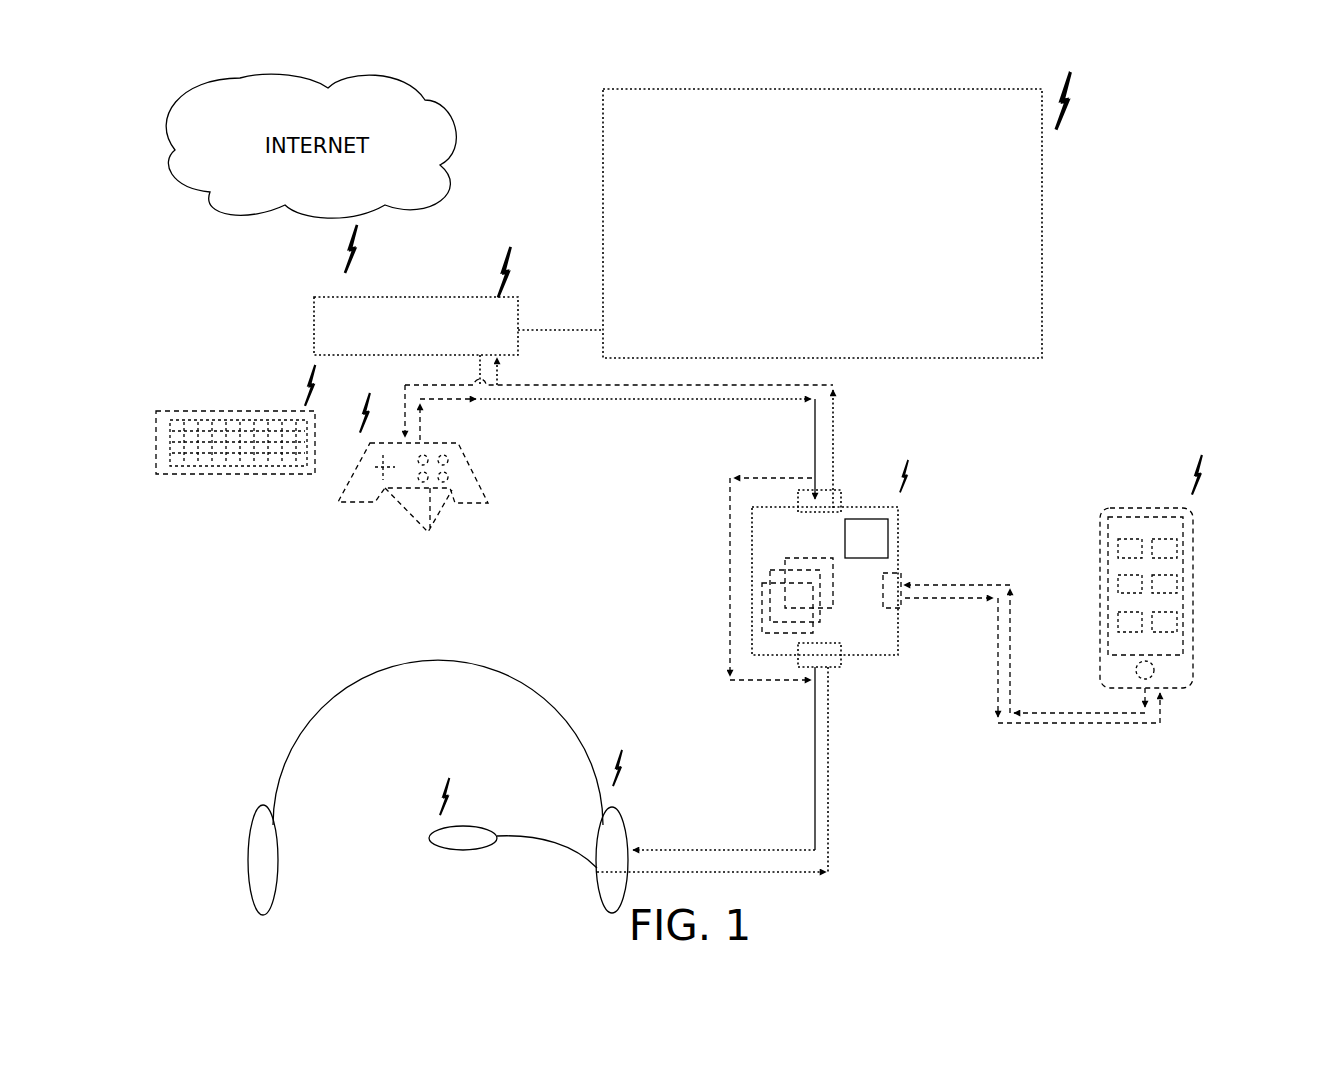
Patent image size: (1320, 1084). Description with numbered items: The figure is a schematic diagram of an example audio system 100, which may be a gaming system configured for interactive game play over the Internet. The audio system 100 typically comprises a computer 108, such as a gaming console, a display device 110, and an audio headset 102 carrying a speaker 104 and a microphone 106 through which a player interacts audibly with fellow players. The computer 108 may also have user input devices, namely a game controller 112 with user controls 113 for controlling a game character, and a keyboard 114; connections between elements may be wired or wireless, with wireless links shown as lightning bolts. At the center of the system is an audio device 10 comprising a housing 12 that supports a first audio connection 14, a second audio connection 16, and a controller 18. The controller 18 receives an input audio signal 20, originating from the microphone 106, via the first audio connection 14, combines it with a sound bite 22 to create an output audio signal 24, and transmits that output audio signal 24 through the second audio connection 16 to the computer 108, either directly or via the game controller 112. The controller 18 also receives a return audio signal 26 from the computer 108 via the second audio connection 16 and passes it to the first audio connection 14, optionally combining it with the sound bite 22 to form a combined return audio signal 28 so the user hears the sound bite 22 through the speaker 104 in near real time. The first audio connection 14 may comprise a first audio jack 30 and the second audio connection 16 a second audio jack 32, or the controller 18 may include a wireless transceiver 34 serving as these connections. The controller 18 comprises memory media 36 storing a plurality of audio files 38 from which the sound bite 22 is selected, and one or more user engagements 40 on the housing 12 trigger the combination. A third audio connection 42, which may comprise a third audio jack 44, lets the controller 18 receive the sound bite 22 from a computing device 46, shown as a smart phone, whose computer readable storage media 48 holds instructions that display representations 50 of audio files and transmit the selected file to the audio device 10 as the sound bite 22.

The audio device 10 is at (348, 522).
The housing 12 is at (868, 655).
The first audio connection 14 is at (828, 643).
The second audio connection 16 is at (808, 512).
The controller 18 is at (888, 540).
The input audio signal 20 is at (828, 793).
The sound bite 22 is at (900, 514).
The output audio signal 24 is at (442, 385).
The return audio signal 26 is at (422, 420).
The combined return audio signal 28 is at (813, 815).
The first audio jack 30 is at (830, 667).
The second audio jack 32 is at (843, 498).
The wireless transceiver 34 is at (867, 548).
The memory media 36 is at (893, 562).
The audio files 38 is at (866, 535).
The user engagements 40 is at (785, 560).
The third audio connection 42 is at (902, 608).
The third audio jack 44 is at (912, 598).
The computing device 46 is at (1142, 500).
The computer readable storage media 48 is at (1178, 672).
The representations 50 is at (1182, 620).
The audio system 100 is at (1173, 250).
The audio headset 102 is at (546, 675).
The speaker 104 is at (620, 815).
The microphone 106 is at (470, 826).
The computer 108 is at (406, 297).
The display device 110 is at (832, 89).
The game controller 112 is at (472, 462).
The user controls 113 is at (428, 547).
The keyboard 114 is at (233, 411).